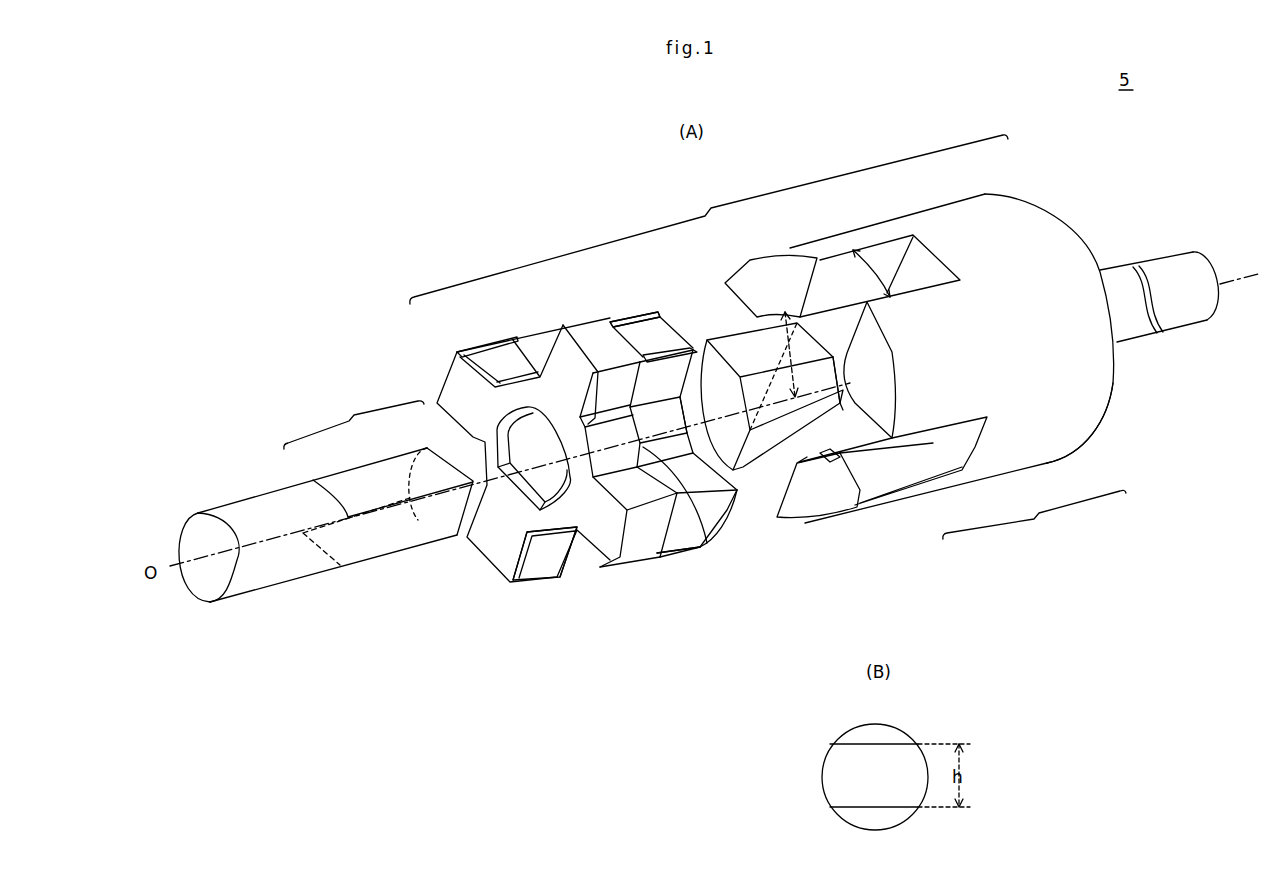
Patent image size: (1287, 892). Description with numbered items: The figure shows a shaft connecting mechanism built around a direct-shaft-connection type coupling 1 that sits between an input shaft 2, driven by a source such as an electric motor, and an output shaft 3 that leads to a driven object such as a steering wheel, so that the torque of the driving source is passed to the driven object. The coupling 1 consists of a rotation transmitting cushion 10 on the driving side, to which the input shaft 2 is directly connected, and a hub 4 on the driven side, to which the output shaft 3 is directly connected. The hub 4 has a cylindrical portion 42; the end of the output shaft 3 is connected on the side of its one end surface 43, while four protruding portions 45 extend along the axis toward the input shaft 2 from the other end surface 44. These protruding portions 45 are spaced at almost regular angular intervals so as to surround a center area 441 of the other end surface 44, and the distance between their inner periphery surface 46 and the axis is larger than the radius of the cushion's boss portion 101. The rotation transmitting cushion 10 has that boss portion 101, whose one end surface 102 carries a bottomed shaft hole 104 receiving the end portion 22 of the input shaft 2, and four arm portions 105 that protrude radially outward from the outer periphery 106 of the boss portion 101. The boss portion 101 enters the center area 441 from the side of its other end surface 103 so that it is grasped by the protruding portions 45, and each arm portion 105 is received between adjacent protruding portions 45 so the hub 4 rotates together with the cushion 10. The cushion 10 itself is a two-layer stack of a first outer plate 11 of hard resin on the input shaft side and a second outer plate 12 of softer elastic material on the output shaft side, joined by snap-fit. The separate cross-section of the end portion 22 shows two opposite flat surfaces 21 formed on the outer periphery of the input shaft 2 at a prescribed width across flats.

The direct-shaft-connection type coupling 1 is at (709, 219).
The input shaft 2 is at (256, 497).
The flat surfaces 21 is at (343, 484).
The end portion 22 is at (354, 422).
The output shaft 3 is at (1155, 256).
The hub 4 is at (963, 202).
The cylindrical portion 42 is at (1034, 522).
The one end surface 43 is at (1121, 391).
The other end surface 44 is at (948, 462).
The center area 441 is at (843, 410).
The protruding portions 45 is at (793, 248).
The inner periphery surface 46 is at (835, 462).
The rotation transmitting cushion 10 is at (564, 312).
The first outer plate 11 is at (632, 590).
The second outer plate 12 is at (713, 563).
The boss portion 101 is at (517, 371).
The one end surface 102 is at (517, 523).
The other end surface 103 is at (699, 448).
The bottomed shaft hole 104 is at (507, 454).
The arm portions 105 is at (455, 358).
The outer periphery 106 is at (707, 543).